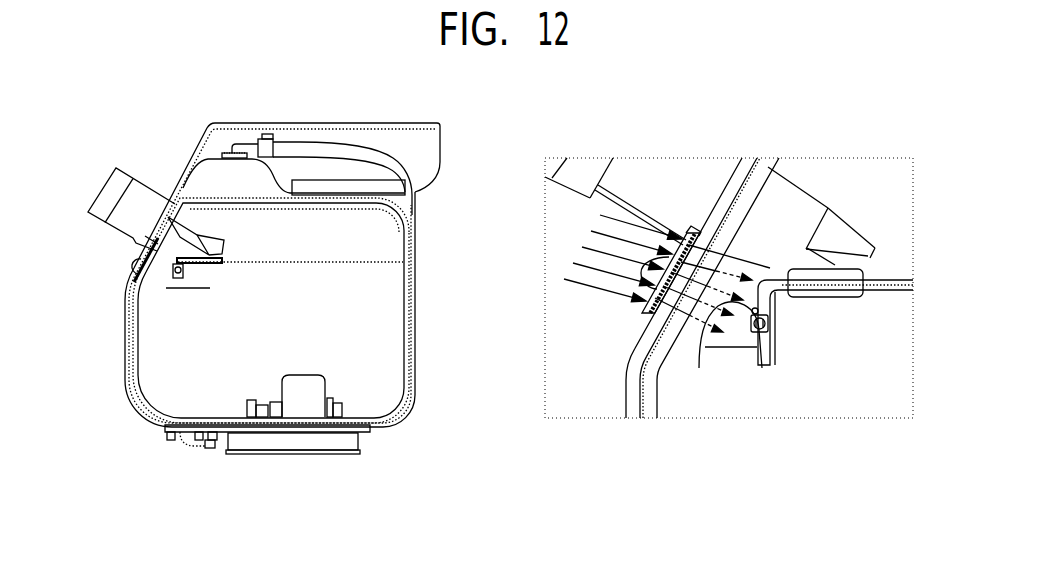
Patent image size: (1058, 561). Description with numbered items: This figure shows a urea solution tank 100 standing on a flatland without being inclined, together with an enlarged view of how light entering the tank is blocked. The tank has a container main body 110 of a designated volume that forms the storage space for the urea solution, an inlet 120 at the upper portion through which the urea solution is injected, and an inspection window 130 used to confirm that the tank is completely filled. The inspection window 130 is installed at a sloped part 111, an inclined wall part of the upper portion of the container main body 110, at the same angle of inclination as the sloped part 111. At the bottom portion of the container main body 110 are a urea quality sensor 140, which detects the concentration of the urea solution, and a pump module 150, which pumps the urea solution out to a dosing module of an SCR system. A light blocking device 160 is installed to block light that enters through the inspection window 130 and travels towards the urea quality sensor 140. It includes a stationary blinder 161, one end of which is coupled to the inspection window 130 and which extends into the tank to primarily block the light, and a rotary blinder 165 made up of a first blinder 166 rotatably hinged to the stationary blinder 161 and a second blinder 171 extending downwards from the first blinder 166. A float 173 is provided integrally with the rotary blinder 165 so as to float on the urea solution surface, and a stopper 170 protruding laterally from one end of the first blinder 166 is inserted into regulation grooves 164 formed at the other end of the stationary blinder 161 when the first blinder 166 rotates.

The urea solution tank 100 is at (371, 305).
The container main body 110 is at (410, 321).
The sloped part 111 is at (748, 188).
The inlet 120 is at (146, 203).
The inspection window 130 is at (132, 270).
The urea quality sensor 140 is at (182, 433).
The pump module 150 is at (312, 388).
The light blocking device 160 is at (161, 284).
The stationary blinder 161 is at (762, 347).
The regulation grooves 164 is at (718, 308).
The rotary blinder 165 is at (773, 278).
The first blinder 166 is at (870, 286).
The stopper 170 is at (759, 333).
The second blinder 171 is at (779, 358).
The float 173 is at (830, 273).